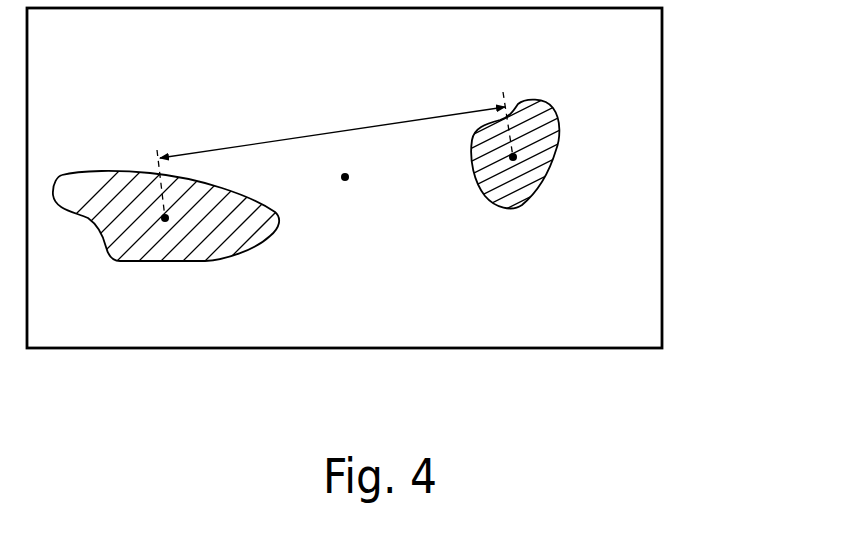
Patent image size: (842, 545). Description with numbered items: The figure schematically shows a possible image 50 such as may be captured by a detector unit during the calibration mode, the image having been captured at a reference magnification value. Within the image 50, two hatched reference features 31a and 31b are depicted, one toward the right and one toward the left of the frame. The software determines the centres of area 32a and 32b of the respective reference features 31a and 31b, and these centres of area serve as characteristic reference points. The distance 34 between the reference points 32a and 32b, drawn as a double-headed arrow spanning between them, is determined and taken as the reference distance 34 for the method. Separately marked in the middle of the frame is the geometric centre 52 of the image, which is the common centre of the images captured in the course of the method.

The reference feature 31a is at (517, 208).
The reference feature 31b is at (117, 262).
The centre of area 32a is at (513, 157).
The centre of area 32b is at (165, 218).
The reference distance 34 is at (392, 123).
The image 50 is at (607, 348).
The geometric centre of the image 52 is at (345, 180).